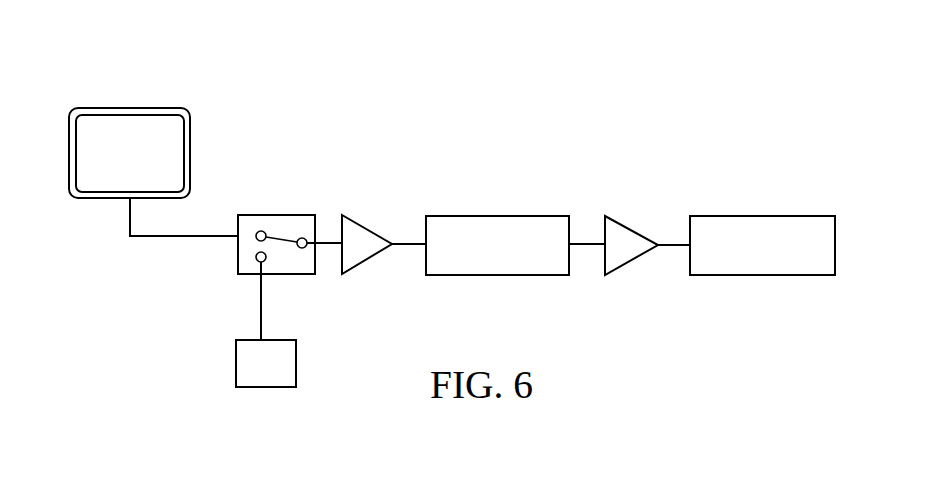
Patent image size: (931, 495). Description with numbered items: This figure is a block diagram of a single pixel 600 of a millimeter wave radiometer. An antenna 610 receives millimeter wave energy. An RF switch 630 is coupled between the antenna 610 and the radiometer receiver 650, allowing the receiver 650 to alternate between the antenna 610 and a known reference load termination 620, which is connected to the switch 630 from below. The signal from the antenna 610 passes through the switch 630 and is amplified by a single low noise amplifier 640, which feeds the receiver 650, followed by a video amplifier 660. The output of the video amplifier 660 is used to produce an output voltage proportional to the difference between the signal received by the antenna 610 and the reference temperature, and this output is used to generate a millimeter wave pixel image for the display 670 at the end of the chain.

The pixel 600 is at (667, 150).
The antenna 610 is at (133, 108).
The reference load termination 620 is at (235, 363).
The RF switch 630 is at (257, 222).
The low noise amplifier 640 is at (363, 225).
The radiometer receiver 650 is at (520, 216).
The video amplifier 660 is at (623, 268).
The display 670 is at (798, 277).